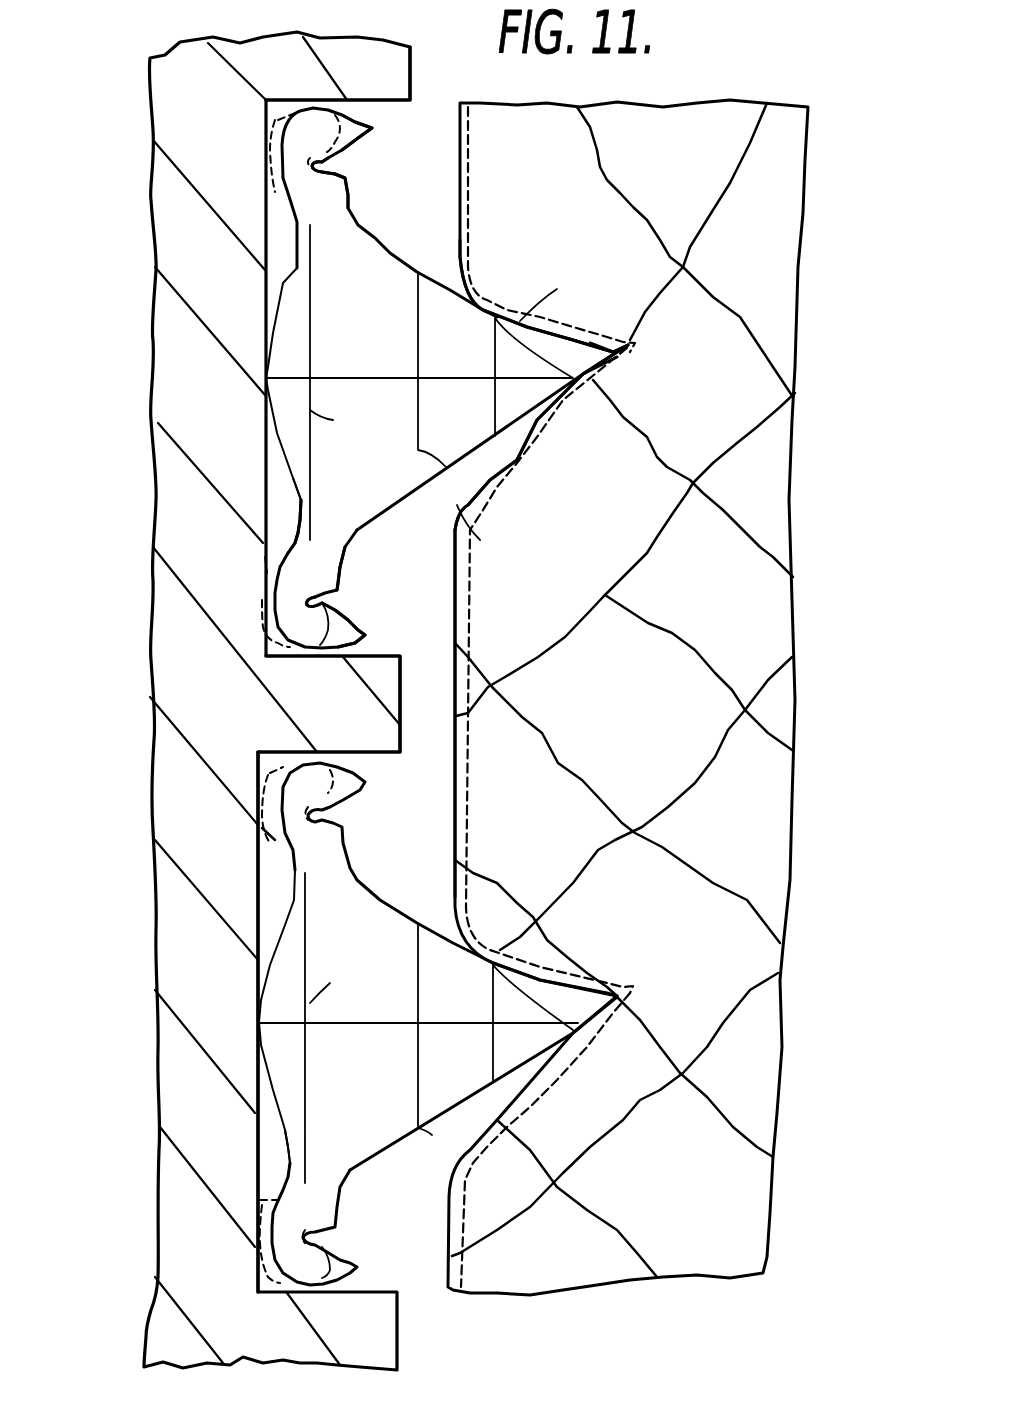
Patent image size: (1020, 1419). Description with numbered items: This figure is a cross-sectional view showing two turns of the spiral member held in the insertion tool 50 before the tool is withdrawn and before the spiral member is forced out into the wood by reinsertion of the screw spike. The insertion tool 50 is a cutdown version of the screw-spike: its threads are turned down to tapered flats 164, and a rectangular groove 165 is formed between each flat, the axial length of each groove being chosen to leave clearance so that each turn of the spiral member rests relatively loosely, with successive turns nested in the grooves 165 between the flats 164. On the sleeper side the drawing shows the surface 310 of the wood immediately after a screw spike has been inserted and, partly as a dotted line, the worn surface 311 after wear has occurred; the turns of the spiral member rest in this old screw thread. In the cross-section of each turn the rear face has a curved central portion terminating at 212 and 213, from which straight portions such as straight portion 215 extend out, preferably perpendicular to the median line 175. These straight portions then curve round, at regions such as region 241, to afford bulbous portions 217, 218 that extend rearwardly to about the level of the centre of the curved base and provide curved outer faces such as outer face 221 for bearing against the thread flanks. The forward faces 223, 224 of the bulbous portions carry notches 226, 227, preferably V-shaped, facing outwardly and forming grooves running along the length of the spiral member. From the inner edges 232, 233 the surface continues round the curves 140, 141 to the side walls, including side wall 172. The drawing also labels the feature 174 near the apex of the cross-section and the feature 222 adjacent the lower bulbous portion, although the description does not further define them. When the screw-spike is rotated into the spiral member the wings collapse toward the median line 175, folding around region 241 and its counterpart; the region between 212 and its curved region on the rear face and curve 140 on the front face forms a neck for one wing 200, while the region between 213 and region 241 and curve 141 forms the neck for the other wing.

The insertion tool 50 is at (153, 1003).
The curve 140 is at (437, 223).
The curve 141 is at (358, 537).
The tapered flats 164 is at (398, 702).
The rectangular groove 165 is at (257, 862).
The side wall 172 is at (510, 477).
The groove apex 174 is at (628, 345).
The median line 175 is at (537, 445).
The wing 200 is at (365, 667).
The termination of central portion 212 is at (294, 249).
The termination of central portion 213 is at (286, 507).
The straight portion 215 is at (300, 517).
The bulbous portion 217 is at (278, 158).
The bulbous portion 218 is at (275, 613).
The curved outer face 221 is at (331, 98).
The lower flange 222 is at (312, 657).
The forward face 223 is at (372, 130).
The forward face 224 is at (365, 635).
The notch 226 is at (334, 161).
The notch 227 is at (333, 600).
The inner edge 232 is at (346, 179).
The inner edge 233 is at (343, 587).
The curved region 241 is at (281, 552).
The surface of the wood 310 is at (463, 259).
The worn surface 311 is at (469, 255).